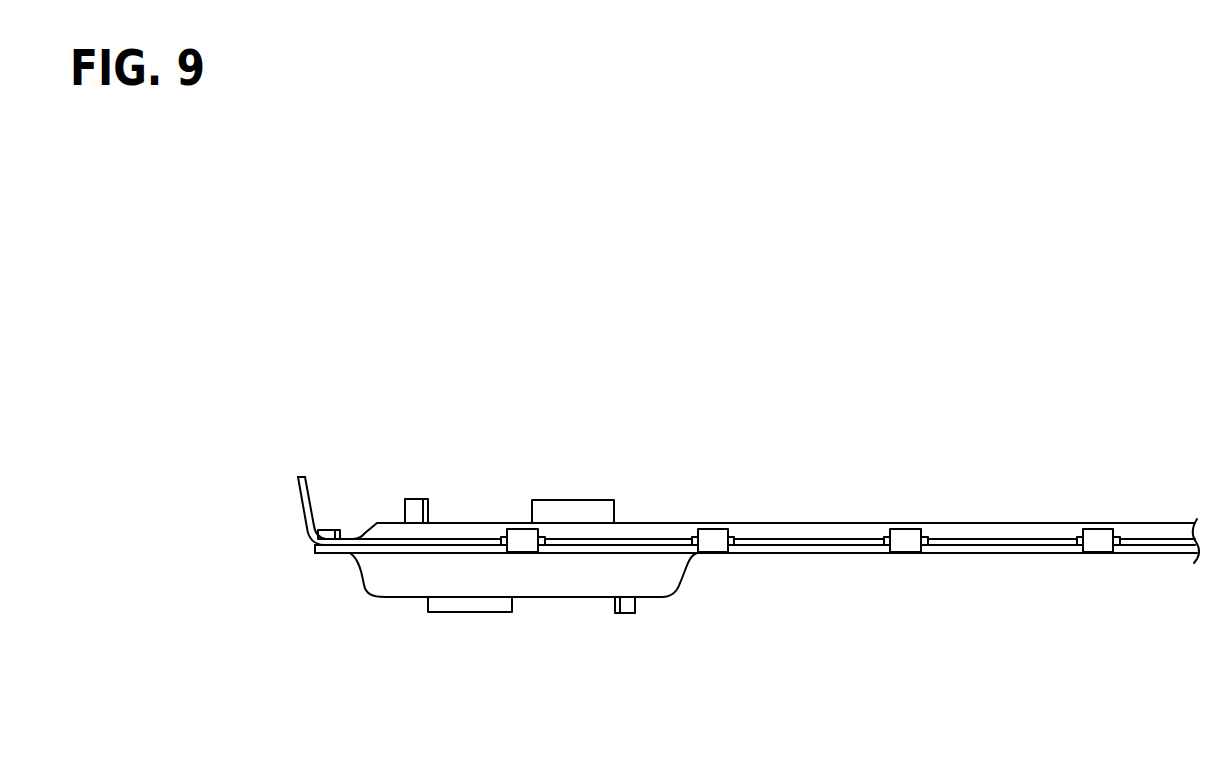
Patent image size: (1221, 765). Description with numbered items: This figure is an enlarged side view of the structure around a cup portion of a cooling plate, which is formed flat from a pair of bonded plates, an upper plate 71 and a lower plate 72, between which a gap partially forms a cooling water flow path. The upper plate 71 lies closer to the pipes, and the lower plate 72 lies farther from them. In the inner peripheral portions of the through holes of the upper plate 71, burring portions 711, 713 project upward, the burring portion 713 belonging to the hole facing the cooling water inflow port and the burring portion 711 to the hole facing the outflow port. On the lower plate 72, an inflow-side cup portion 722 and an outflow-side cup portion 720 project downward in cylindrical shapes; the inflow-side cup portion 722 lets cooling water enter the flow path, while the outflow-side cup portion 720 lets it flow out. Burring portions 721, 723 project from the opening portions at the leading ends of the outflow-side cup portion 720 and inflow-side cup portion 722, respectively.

The upper plate 71 is at (1010, 523).
The lower plate 72 is at (983, 555).
The burring portion 711 is at (620, 437).
The burring portion 713 is at (592, 500).
The outflow-side cup portion 720 is at (485, 617).
The inflow-side cup portion 722 is at (362, 573).
The burring portion 721 is at (669, 660).
The burring portion 723 is at (627, 613).